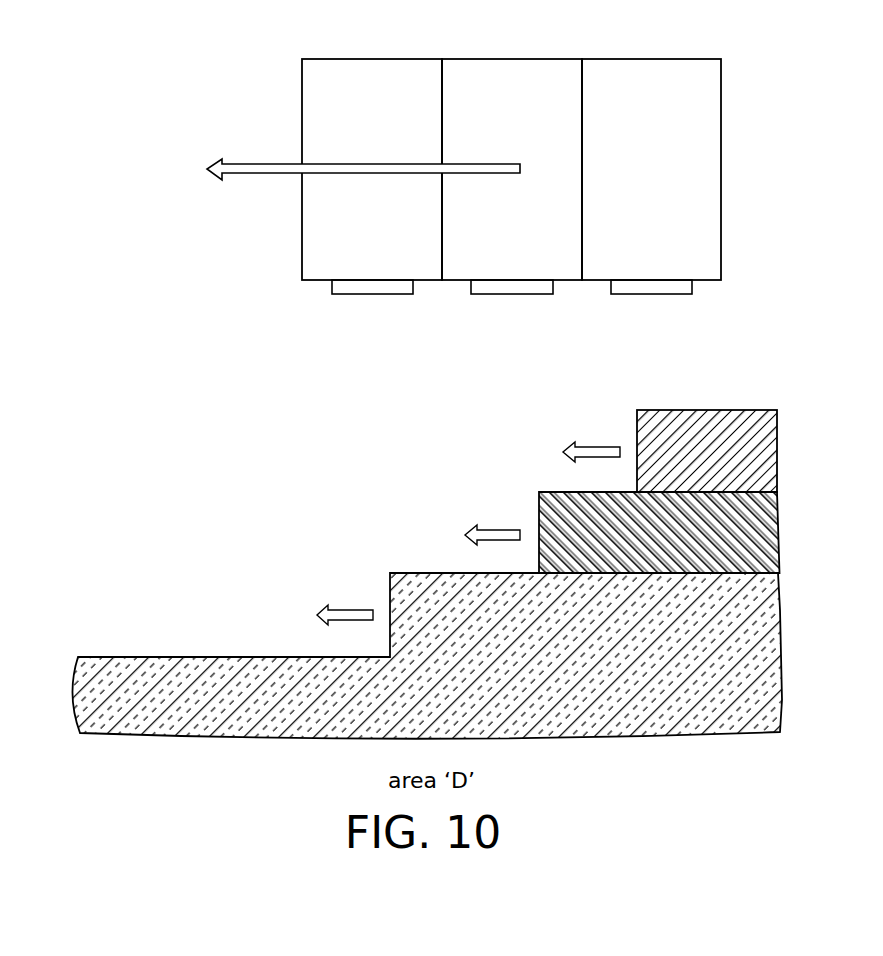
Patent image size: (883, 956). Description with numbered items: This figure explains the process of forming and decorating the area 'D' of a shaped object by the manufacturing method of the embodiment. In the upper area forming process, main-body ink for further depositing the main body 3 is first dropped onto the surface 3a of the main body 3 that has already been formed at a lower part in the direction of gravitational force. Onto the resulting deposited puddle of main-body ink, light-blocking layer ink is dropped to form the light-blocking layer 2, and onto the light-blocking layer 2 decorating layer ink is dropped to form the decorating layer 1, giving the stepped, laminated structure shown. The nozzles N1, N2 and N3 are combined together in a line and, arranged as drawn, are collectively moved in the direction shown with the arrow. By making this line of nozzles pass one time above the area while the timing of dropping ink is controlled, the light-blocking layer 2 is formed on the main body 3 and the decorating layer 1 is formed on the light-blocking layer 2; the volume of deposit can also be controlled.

The nozzle N1 is at (650, 73).
The nozzle N2 is at (511, 73).
The nozzle N3 is at (372, 73).
The decorating layer 1 is at (760, 453).
The light-blocking layer 2 is at (760, 533).
The main body 3 is at (757, 658).
The surface of the main body 3a is at (203, 657).